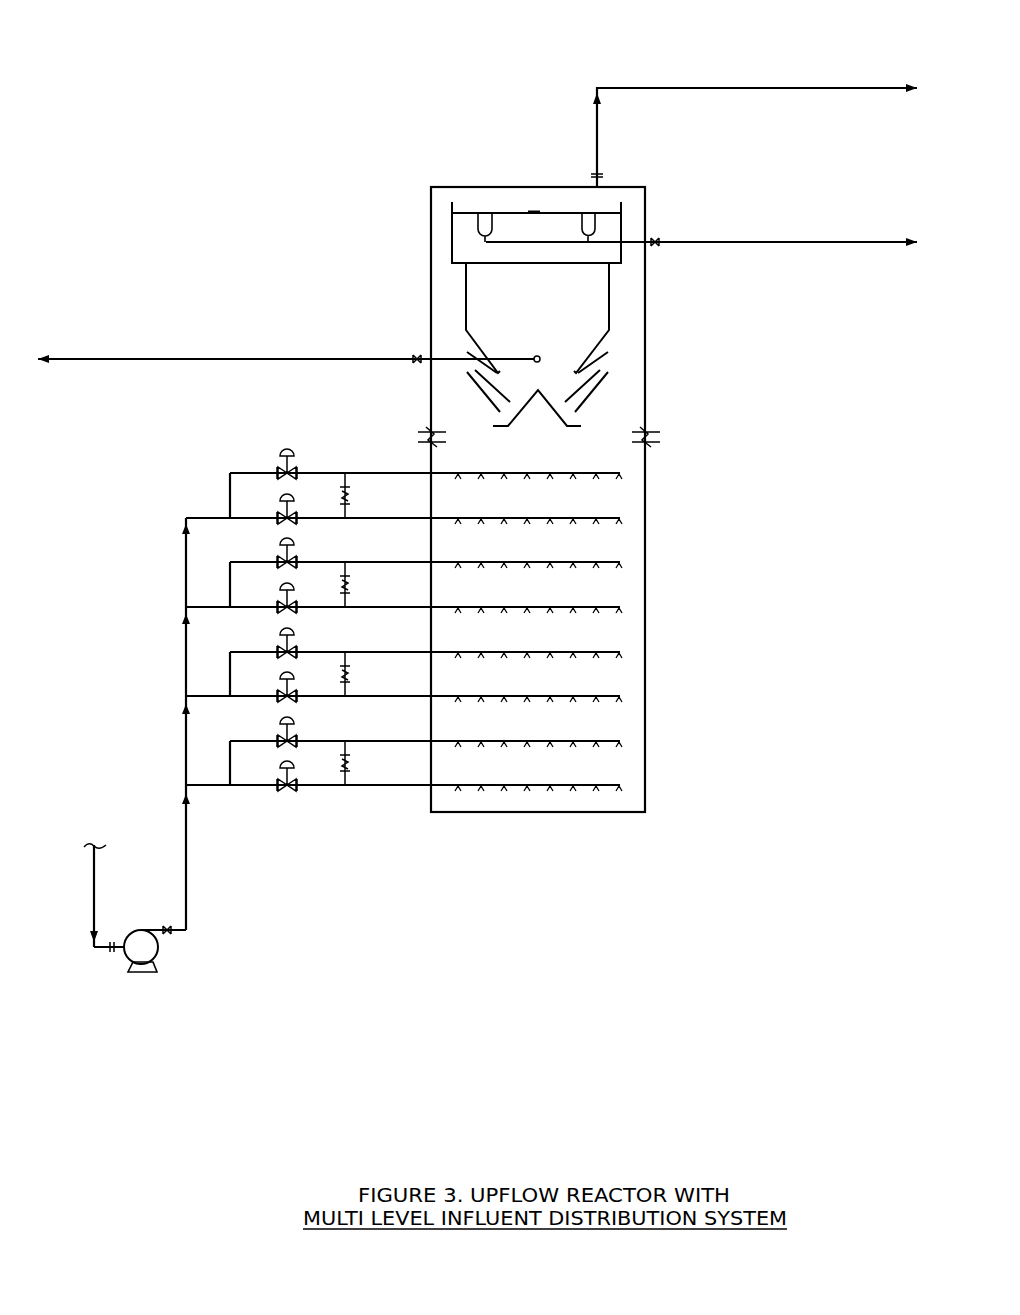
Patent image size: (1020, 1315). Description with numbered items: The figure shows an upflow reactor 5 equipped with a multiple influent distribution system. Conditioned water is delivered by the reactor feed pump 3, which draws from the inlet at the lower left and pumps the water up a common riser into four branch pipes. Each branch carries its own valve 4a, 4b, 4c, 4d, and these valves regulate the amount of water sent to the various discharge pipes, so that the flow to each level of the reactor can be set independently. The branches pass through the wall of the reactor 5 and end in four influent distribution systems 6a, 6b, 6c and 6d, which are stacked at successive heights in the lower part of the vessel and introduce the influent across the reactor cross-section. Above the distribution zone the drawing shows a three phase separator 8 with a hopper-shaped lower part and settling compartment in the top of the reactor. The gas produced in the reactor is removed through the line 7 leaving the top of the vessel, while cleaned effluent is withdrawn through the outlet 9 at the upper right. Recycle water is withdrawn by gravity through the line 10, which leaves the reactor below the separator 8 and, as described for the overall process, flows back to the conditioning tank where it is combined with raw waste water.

The reactor feed pump 3 is at (163, 955).
The valve 4a is at (289, 787).
The valve 4b is at (289, 698).
The valve 4c is at (289, 609).
The valve 4d is at (289, 520).
The upflow reactor 5 is at (647, 607).
The influent distribution system 6a is at (528, 785).
The influent distribution system 6b is at (528, 696).
The influent distribution system 6c is at (528, 607).
The influent distribution system 6d is at (528, 518).
The gas line 7 is at (703, 84).
The settler / gas-solids separator 8 is at (610, 290).
The effluent outlet 9 is at (703, 238).
The recycle line 10 is at (240, 357).